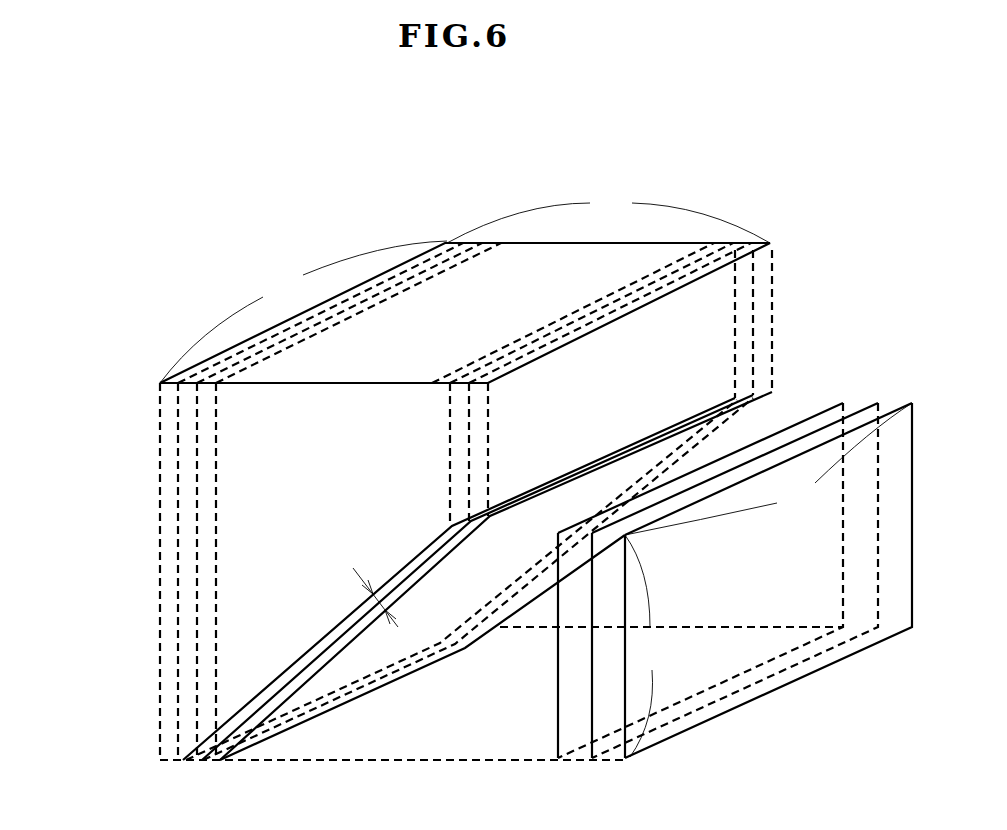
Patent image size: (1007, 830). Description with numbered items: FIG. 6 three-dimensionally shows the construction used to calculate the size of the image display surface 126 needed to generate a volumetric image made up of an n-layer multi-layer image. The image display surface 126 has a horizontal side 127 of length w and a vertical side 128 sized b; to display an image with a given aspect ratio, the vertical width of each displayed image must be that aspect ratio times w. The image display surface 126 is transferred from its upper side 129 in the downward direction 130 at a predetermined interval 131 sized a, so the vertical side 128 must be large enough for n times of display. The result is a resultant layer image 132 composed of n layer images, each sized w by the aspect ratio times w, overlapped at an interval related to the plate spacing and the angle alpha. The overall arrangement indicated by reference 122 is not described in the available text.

The heat transfer element 122 is at (146, 568).
The image display surface 126 is at (518, 255).
The horizontal side 127 is at (373, 278).
The vertical side 128 is at (678, 245).
The upper side 129 is at (643, 307).
The downward direction 130 is at (900, 210).
The predetermined interval 131 is at (483, 385).
The resultant layer image 132 is at (627, 760).